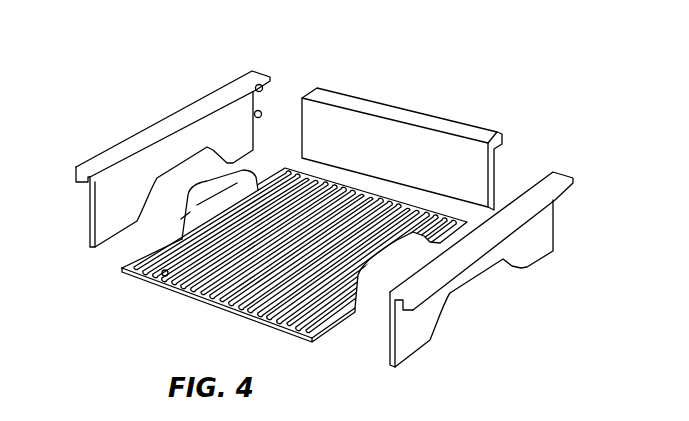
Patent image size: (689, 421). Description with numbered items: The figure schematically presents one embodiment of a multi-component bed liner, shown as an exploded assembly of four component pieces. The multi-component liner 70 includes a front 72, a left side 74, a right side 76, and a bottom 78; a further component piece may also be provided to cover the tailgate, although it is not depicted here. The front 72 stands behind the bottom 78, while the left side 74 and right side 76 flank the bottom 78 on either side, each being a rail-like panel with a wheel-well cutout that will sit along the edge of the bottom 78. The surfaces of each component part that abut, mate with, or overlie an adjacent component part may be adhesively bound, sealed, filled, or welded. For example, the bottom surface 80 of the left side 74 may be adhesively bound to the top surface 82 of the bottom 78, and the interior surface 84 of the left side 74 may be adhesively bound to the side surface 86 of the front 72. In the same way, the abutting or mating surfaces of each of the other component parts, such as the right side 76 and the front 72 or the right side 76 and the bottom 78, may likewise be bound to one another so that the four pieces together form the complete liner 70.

The multi-component liner 70 is at (146, 100).
The front 72 is at (470, 172).
The left side 74 is at (128, 172).
The right side 76 is at (543, 232).
The bottom 78 is at (237, 311).
The bottom surface 80 is at (121, 243).
The top surface 82 is at (285, 168).
The interior surface 84 is at (253, 118).
The side surface 86 is at (294, 119).